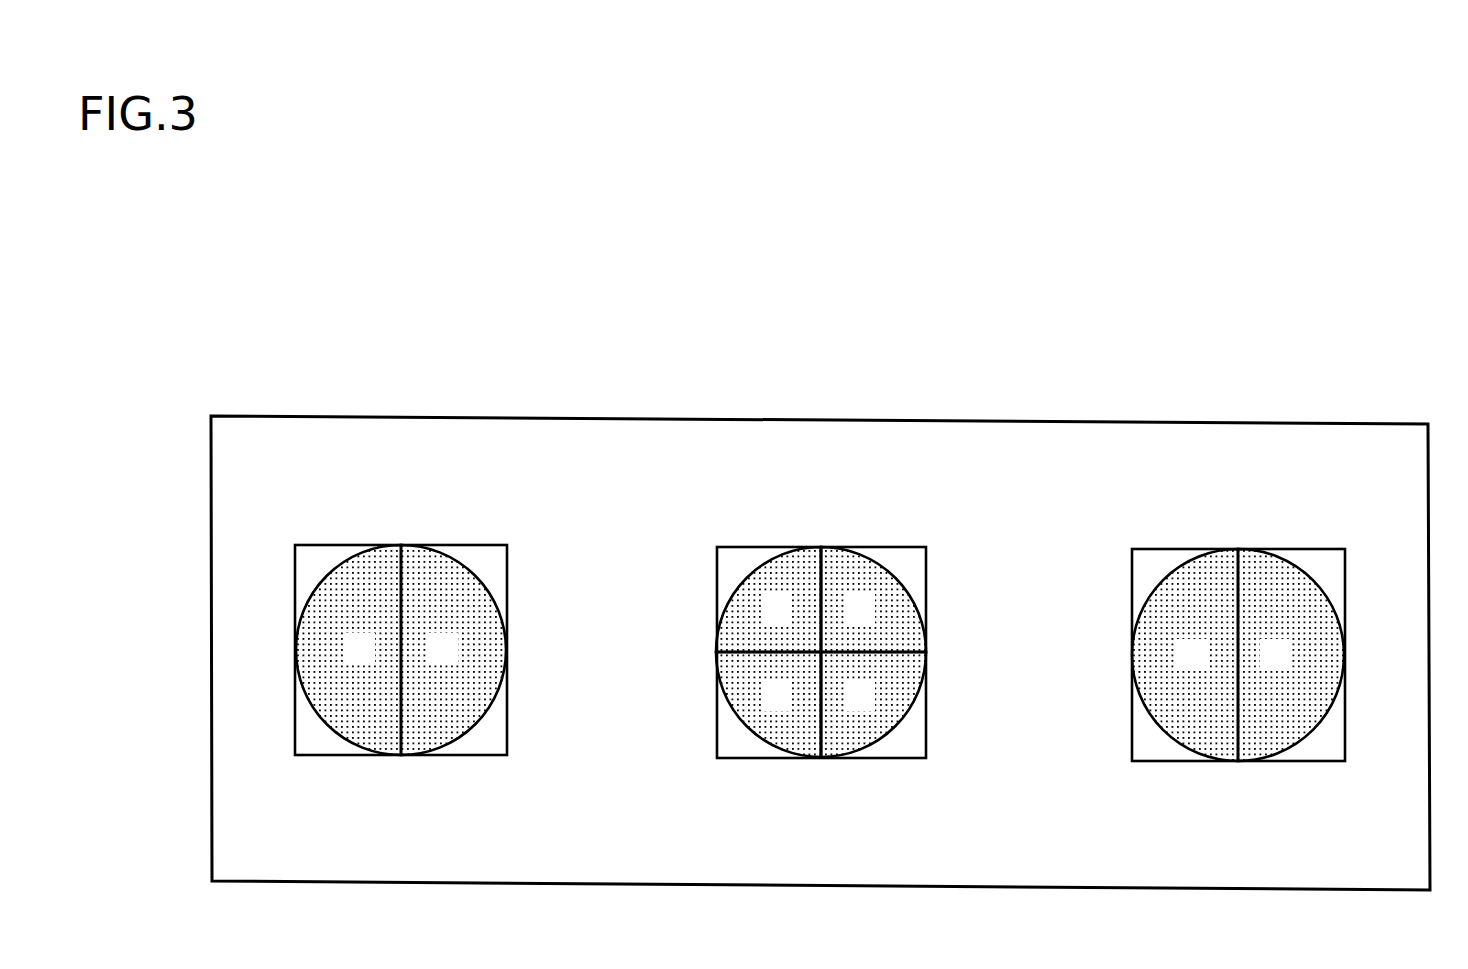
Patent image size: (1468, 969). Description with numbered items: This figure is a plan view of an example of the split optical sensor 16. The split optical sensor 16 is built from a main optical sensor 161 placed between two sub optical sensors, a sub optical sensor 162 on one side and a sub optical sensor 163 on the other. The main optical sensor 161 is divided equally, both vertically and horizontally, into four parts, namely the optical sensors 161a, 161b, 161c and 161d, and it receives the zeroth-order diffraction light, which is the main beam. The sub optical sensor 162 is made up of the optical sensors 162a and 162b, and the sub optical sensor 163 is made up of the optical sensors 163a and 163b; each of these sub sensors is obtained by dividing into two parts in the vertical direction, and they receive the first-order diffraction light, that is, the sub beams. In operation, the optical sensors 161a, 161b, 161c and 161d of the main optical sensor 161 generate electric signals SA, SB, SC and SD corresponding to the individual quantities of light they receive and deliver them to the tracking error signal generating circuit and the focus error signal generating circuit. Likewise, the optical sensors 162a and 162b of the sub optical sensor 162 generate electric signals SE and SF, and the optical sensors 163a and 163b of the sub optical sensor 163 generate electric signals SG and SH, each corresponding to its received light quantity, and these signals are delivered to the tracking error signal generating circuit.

The split optical sensor 16 is at (846, 408).
The main optical sensor 161 is at (894, 654).
The optical sensor 161a is at (906, 678).
The optical sensor 161b is at (783, 740).
The optical sensor 161c is at (765, 560).
The optical sensor 161d is at (866, 575).
The sub optical sensor 162 is at (447, 665).
The optical sensor 162a is at (373, 737).
The optical sensor 162b is at (452, 730).
The sub optical sensor 163 is at (1254, 670).
The optical sensor 163a is at (1170, 735).
The optical sensor 163b is at (1280, 738).